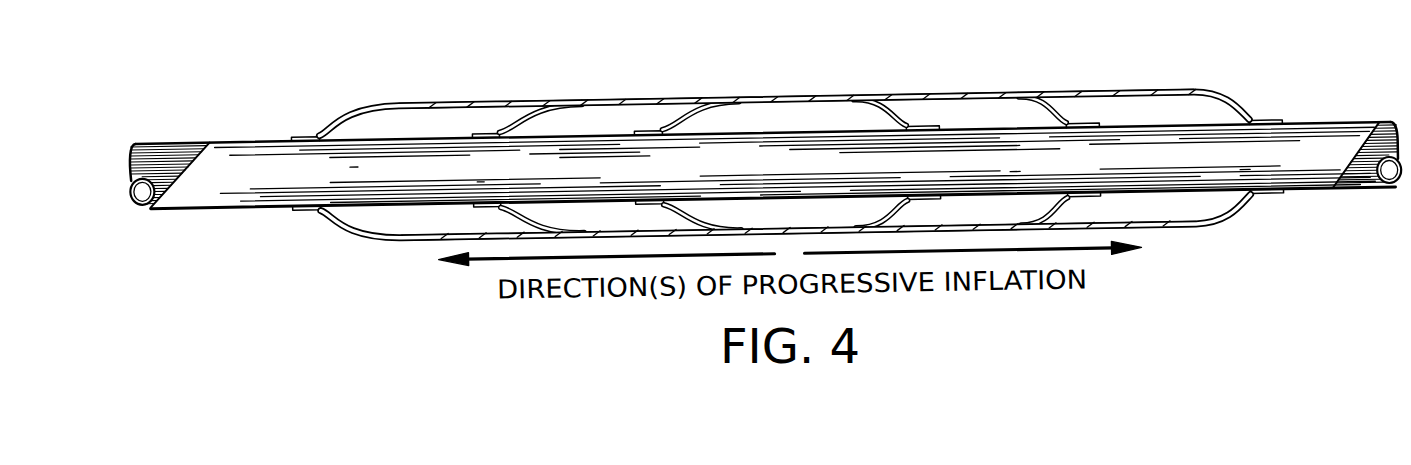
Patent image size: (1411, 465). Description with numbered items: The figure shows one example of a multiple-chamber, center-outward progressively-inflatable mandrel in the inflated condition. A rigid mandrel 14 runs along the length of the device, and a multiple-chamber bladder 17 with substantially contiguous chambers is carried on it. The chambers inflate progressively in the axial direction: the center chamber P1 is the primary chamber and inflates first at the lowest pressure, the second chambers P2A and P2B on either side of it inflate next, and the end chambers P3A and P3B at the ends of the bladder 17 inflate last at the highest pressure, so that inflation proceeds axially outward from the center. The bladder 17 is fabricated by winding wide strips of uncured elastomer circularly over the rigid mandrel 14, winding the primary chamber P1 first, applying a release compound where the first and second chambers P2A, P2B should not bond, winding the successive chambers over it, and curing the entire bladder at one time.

The rigid mandrel 14 is at (232, 207).
The bladder 17 is at (1190, 227).
The center chamber P1 is at (790, 118).
The second chamber P2A is at (619, 120).
The second chamber P2B is at (967, 117).
The end chamber P3A is at (440, 122).
The end chamber P3B is at (1139, 112).